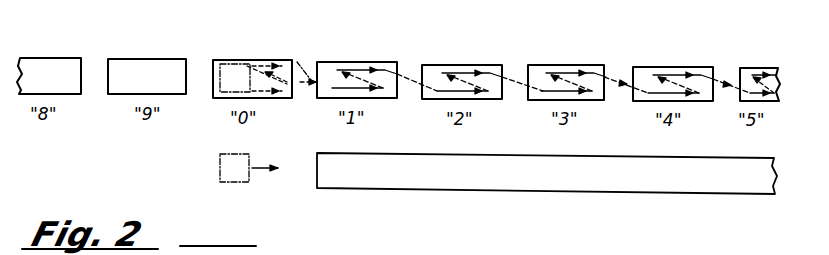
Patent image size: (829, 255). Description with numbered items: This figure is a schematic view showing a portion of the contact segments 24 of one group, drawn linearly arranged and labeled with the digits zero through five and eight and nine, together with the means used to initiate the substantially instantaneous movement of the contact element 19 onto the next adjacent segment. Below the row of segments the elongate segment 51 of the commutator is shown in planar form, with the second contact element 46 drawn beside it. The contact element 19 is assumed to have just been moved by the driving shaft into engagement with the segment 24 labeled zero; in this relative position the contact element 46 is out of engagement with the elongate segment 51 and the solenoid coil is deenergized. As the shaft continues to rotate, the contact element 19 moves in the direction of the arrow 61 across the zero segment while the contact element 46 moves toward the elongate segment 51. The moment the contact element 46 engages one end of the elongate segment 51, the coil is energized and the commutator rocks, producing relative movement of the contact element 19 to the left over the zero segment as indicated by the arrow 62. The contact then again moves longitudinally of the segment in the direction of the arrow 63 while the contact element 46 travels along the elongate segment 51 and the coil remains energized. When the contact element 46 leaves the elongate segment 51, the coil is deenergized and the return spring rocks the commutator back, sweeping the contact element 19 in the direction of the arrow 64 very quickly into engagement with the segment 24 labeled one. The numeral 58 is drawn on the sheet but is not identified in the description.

The contact element 19 is at (236, 67).
The contact segments 24 is at (274, 66).
The contact element 46 is at (240, 181).
The elongate segment 51 is at (462, 188).
The memory register 58 is at (394, 252).
The arrow 61 is at (268, 93).
The arrow 62 is at (291, 80).
The arrow 63 is at (272, 66).
The arrow 64 is at (303, 70).